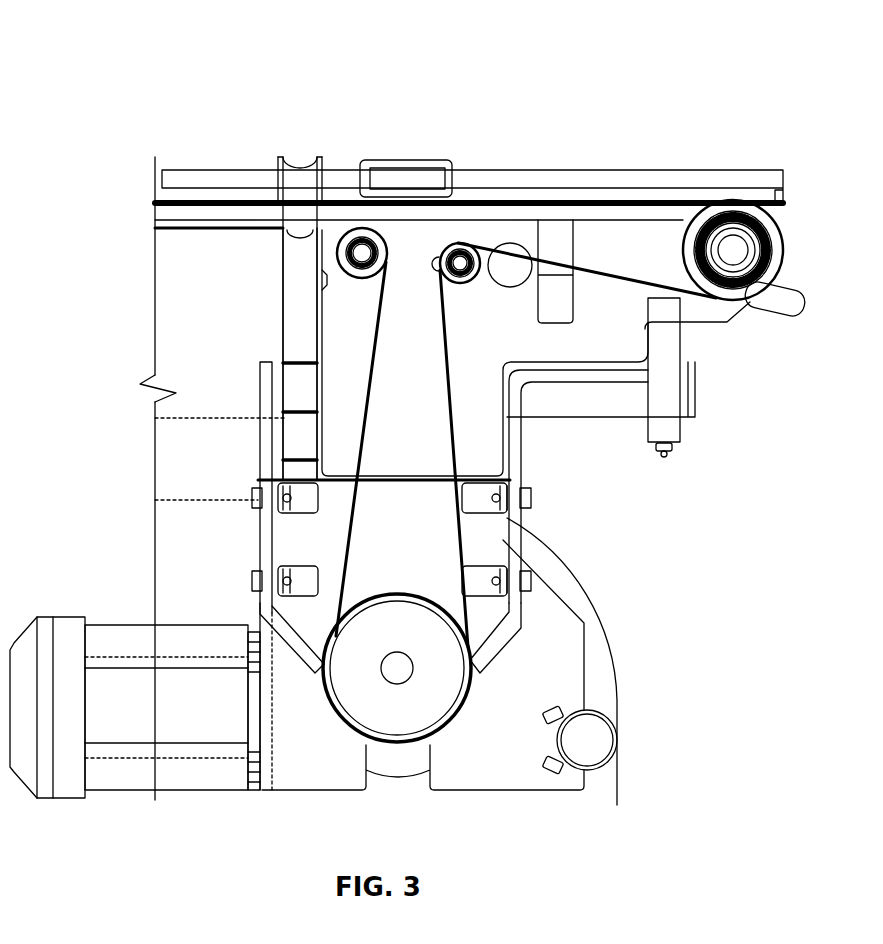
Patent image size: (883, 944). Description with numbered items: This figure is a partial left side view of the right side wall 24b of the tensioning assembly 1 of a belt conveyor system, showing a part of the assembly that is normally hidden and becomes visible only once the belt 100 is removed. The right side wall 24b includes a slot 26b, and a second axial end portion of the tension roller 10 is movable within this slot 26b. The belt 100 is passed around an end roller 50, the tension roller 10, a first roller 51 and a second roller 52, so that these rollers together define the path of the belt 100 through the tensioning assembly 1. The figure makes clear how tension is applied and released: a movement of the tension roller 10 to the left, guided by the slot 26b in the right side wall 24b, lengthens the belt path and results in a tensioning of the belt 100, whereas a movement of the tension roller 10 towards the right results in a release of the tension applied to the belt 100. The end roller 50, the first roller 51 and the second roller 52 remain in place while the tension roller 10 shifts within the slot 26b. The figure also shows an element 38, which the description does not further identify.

The tensioning assembly 1 is at (578, 62).
The tension roller 10 is at (462, 244).
The slot 26b is at (437, 258).
The second roller 52 is at (362, 240).
The belt 100 is at (680, 192).
The end roller 50 is at (740, 248).
The lever 38 is at (797, 303).
The right side wall 24b is at (728, 323).
The first roller 51 is at (382, 710).